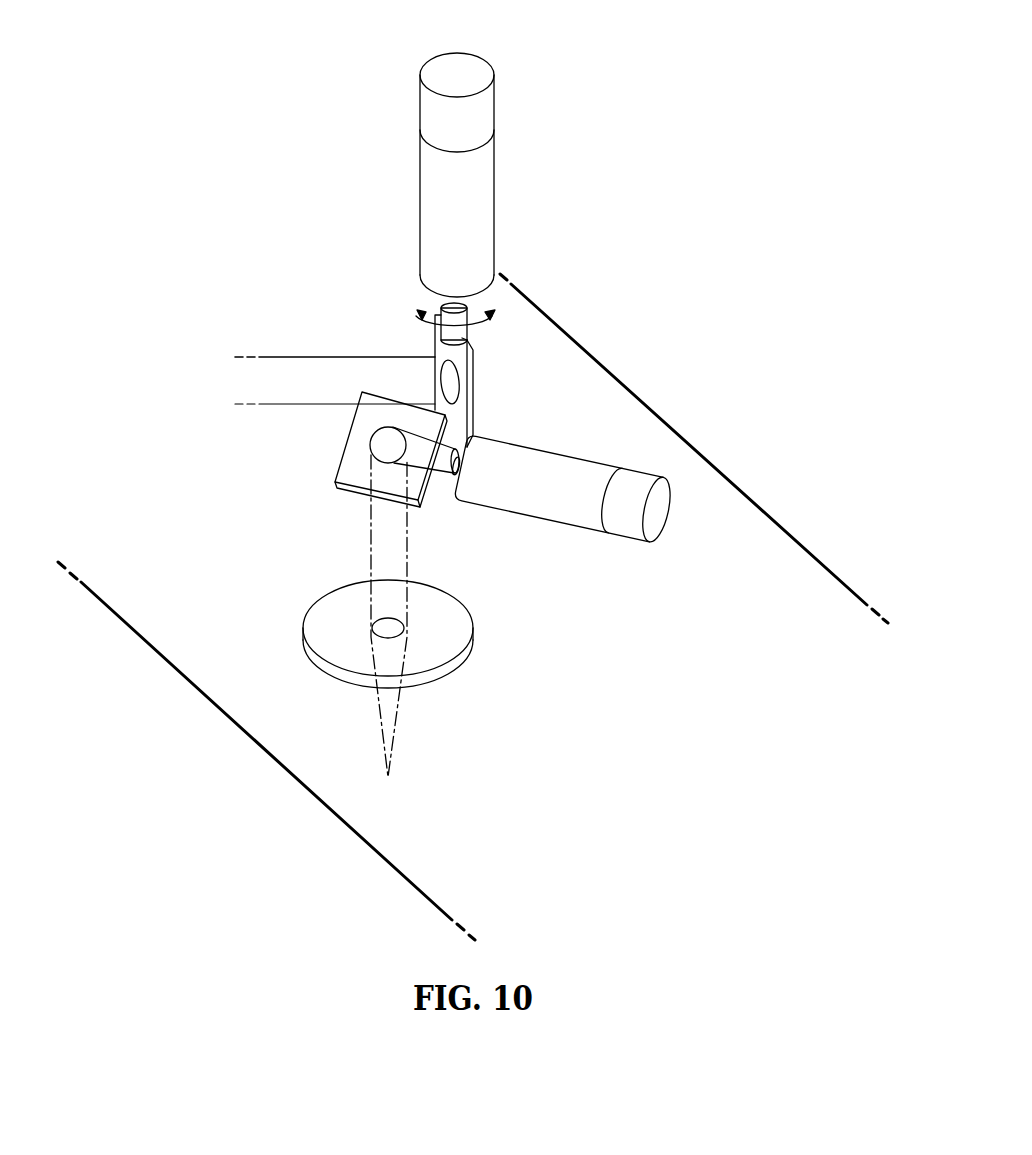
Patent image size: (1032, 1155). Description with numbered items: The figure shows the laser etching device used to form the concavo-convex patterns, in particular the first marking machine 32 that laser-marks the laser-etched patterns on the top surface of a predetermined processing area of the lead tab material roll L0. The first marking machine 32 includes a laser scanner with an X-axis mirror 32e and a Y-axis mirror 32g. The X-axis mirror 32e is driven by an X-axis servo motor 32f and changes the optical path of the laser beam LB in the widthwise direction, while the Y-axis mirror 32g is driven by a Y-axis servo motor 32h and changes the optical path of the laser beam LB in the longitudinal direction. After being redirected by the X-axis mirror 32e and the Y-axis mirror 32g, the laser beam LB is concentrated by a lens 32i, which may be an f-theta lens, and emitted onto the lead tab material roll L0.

The first marking machine 32 is at (388, 98).
The X-axis servo motor 32f is at (495, 205).
The X-axis mirror 32e is at (472, 382).
The Y-axis mirror 32g is at (423, 506).
The Y-axis servo motor 32h is at (578, 518).
The lens 32i is at (453, 665).
The laser beam LB is at (372, 540).
The lead tab material roll L0 is at (748, 492).